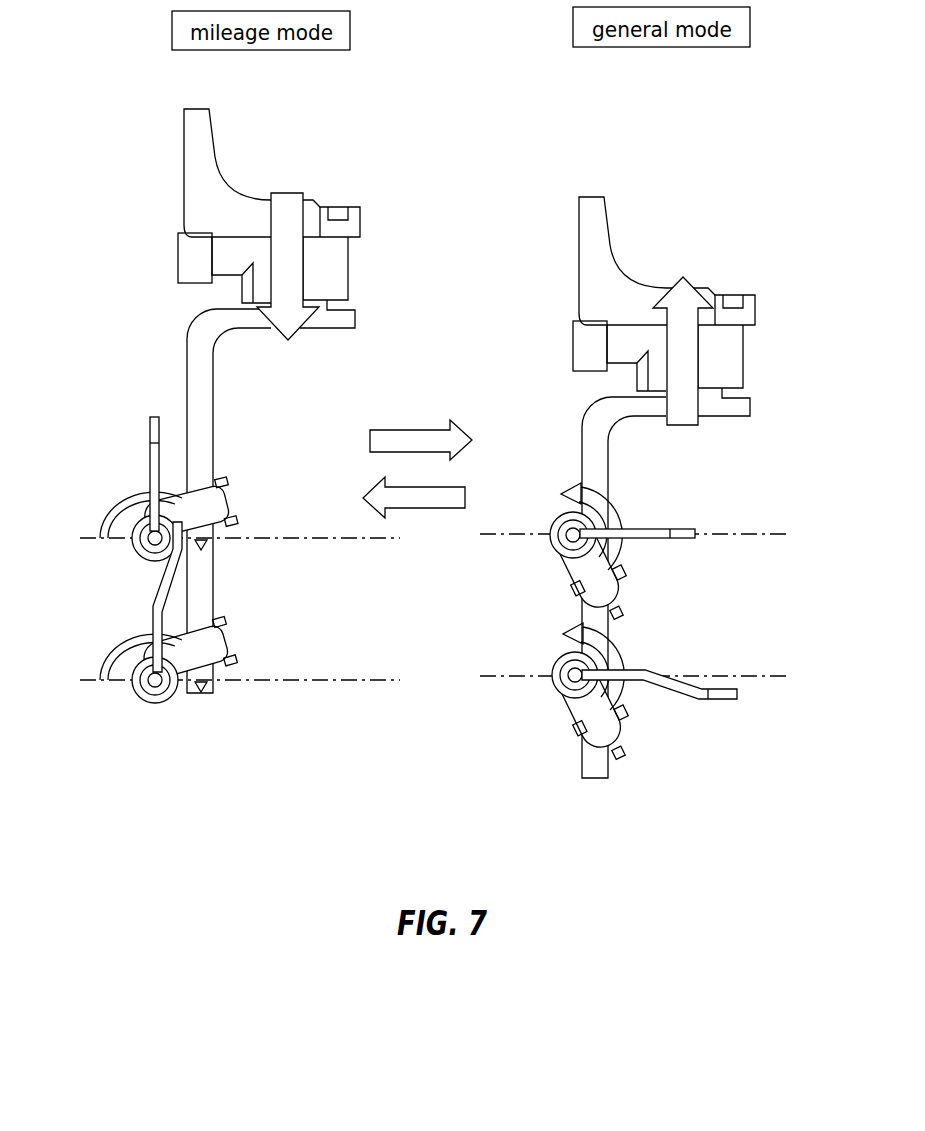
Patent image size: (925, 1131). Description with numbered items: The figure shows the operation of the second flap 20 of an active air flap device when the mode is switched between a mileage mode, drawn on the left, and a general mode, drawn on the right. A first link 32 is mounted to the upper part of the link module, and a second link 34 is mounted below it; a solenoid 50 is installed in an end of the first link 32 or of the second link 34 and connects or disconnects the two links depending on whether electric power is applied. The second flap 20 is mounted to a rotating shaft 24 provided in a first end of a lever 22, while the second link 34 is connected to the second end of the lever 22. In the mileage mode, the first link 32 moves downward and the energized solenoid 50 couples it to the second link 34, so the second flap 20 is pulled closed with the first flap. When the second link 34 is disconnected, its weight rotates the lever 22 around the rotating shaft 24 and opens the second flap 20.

The second flap 20 is at (153, 458).
The lever 22 is at (224, 667).
The rotating shaft 24 is at (135, 552).
The first link 32 is at (195, 163).
The second link 34 is at (205, 378).
The solenoid 50 is at (220, 257).